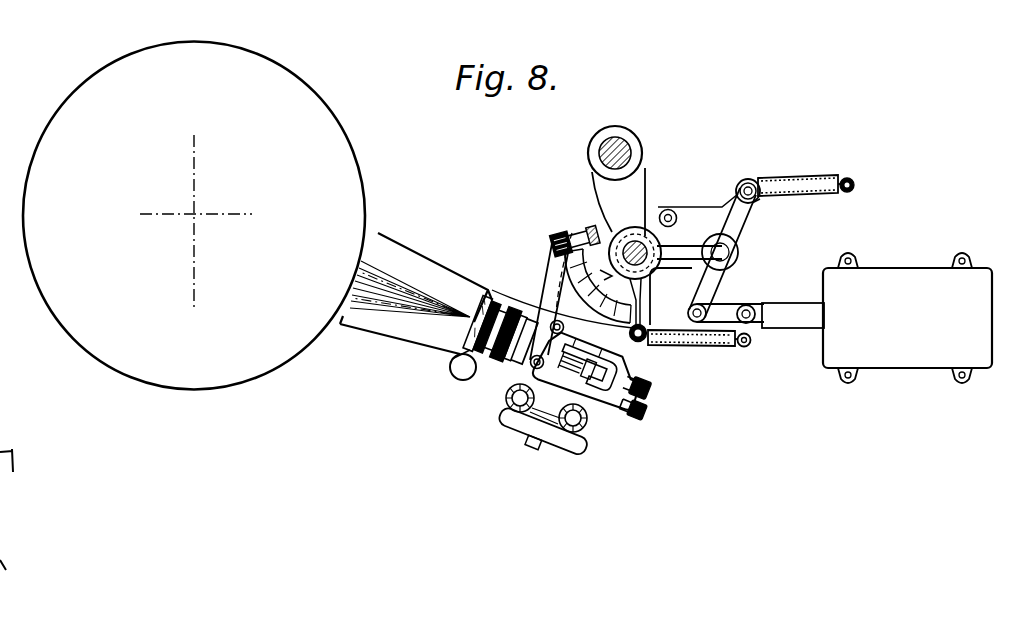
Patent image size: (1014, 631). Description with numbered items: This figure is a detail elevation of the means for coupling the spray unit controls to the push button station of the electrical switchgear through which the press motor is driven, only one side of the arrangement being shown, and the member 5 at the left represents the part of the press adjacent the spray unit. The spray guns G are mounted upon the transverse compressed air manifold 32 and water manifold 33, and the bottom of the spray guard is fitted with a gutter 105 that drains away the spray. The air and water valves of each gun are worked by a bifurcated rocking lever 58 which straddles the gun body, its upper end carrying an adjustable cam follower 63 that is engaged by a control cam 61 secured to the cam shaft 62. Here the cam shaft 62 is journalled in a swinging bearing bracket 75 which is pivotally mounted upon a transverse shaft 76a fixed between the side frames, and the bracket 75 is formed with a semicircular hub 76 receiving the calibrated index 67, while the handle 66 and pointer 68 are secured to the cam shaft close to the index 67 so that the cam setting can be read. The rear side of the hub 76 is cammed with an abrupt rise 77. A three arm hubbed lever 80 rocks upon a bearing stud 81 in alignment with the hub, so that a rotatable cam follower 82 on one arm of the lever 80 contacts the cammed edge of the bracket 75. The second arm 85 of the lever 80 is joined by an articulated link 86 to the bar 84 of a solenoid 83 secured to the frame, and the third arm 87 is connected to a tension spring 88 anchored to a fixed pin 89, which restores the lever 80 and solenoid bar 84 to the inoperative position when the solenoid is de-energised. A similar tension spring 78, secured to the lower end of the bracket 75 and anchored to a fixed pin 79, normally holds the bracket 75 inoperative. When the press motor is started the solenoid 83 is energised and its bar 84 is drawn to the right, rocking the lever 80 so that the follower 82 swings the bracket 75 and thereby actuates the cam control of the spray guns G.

The horn 5 is at (422, 251).
The gutter 105 is at (452, 376).
The bifurcated rocking lever 58 is at (557, 306).
The indicator scale 67 is at (590, 359).
The hub 76 is at (558, 297).
The cam 61 is at (613, 228).
The cam follower 63 is at (605, 258).
The bearing bracket 75 is at (649, 167).
The transverse shaft 76a is at (634, 138).
The abrupt rise 77 is at (682, 238).
The rotatable cam follower 82 is at (668, 209).
The bearing stud 81 is at (738, 247).
The three arm hubbed lever 80 is at (741, 256).
The handle 66 is at (717, 205).
The tension spring 88 is at (786, 177).
The fixed pin 89 is at (855, 185).
The third arm 87 is at (752, 204).
The second arm 85 is at (704, 283).
The articulated link 86 is at (727, 304).
The solenoid bar 84 is at (797, 323).
The solenoid 83 is at (920, 353).
The cam shaft 62 is at (646, 296).
The pointer 68 is at (645, 347).
The tension spring 78 is at (708, 347).
The fixed pin 79 is at (746, 348).
The gun G is at (652, 403).
The water manifold 33 is at (506, 402).
The air manifold 32 is at (586, 432).